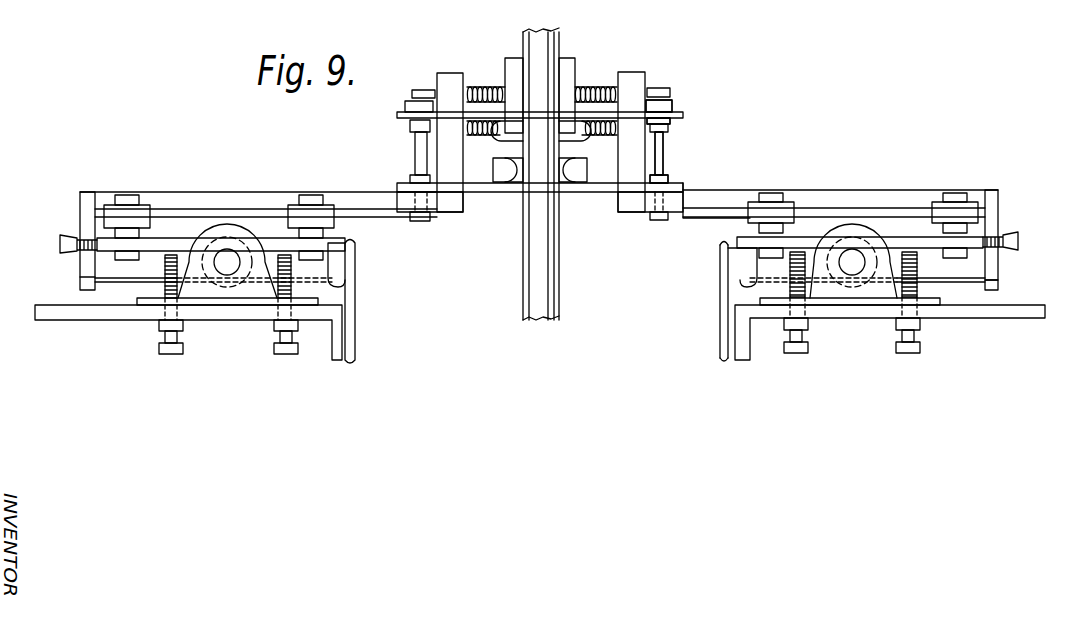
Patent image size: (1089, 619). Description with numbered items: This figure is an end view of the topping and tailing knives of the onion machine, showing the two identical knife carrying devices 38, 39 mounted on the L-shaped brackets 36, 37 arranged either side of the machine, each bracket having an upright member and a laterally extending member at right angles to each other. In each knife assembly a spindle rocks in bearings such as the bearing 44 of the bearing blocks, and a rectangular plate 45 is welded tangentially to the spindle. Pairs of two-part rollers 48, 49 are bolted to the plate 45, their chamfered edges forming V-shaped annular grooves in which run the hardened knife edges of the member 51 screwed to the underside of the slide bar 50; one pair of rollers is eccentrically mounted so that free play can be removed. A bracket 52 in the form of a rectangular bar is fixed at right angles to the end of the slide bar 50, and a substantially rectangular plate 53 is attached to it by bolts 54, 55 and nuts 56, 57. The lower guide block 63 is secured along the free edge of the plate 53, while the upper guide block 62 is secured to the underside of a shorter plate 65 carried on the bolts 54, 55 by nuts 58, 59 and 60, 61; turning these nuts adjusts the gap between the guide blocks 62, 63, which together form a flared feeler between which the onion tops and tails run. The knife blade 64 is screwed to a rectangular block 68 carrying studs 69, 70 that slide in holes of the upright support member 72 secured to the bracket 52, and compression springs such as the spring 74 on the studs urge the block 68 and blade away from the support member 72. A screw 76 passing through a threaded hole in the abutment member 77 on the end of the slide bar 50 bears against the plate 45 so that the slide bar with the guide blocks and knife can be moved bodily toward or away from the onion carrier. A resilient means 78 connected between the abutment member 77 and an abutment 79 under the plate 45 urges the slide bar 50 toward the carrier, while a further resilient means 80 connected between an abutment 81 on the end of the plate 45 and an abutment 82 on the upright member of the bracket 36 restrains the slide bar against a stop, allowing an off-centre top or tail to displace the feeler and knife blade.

The L-shaped bracket 36 is at (993, 312).
The L-shaped bracket 37 is at (80, 306).
The knife carrying device 38 is at (868, 189).
The knife carrying device 39 is at (206, 189).
The bearing 44 is at (848, 287).
The rectangular plate 45 is at (930, 245).
The pair of rollers 48 is at (965, 213).
The pair of rollers 49 is at (788, 207).
The slide bar 50 is at (922, 197).
The member 51 is at (742, 218).
The bracket 52 is at (669, 203).
The substantially rectangular plate 53 is at (560, 186).
The bolt 54 is at (658, 160).
The bolt 55 is at (630, 205).
The nut 56 is at (668, 172).
The nut 57 is at (702, 178).
The nut 58 is at (672, 126).
The nut 59 is at (721, 145).
The nut 60 is at (677, 108).
The nut 61 is at (709, 96).
The upper guide block 62 is at (574, 137).
The lower guide block 63 is at (583, 173).
The knife blade 64 is at (569, 164).
The plate 65 is at (684, 117).
The rectangular block 68 is at (566, 62).
The stud 69 is at (667, 128).
The stud 70 is at (665, 97).
The support member 72 is at (630, 80).
The compression spring 74 is at (580, 88).
The screw 76 is at (1013, 231).
The abutment member 77 is at (996, 268).
The resilient means 78 is at (938, 280).
The abutment 79 is at (728, 283).
The resilient means 80 is at (753, 266).
The abutment 81 is at (722, 248).
The abutment 82 is at (723, 348).